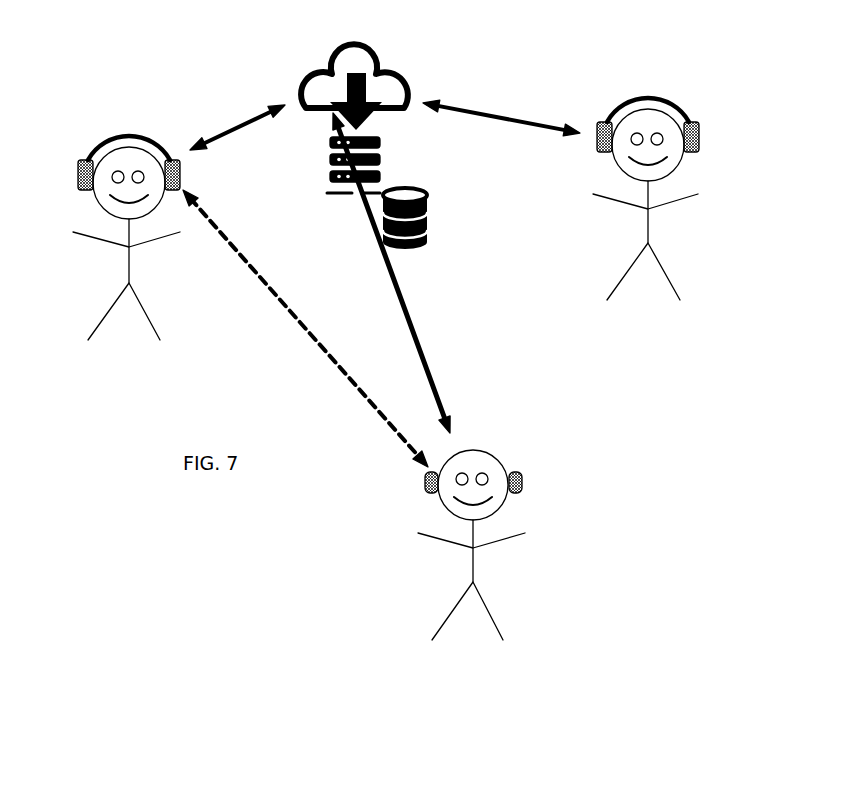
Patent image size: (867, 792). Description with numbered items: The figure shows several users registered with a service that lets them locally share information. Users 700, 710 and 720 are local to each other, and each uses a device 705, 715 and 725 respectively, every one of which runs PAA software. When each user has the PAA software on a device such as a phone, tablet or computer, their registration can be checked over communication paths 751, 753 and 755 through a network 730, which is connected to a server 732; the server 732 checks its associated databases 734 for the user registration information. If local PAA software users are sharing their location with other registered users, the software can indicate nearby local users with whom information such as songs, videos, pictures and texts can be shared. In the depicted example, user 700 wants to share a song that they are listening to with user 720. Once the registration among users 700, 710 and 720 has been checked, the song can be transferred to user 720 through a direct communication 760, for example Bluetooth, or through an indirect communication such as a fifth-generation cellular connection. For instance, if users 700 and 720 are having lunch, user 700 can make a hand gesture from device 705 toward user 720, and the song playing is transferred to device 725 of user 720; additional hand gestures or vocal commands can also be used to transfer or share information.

The user 700 is at (126, 247).
The device 705 is at (78, 170).
The user 710 is at (646, 208).
The device 715 is at (700, 128).
The user 720 is at (470, 548).
The device 725 is at (522, 482).
The network 730 is at (357, 80).
The server 732 is at (376, 165).
The databases 734 is at (425, 218).
The communication path 751 is at (237, 122).
The communication path 753 is at (501, 113).
The communication path 755 is at (394, 273).
The direct communication 760 is at (305, 328).